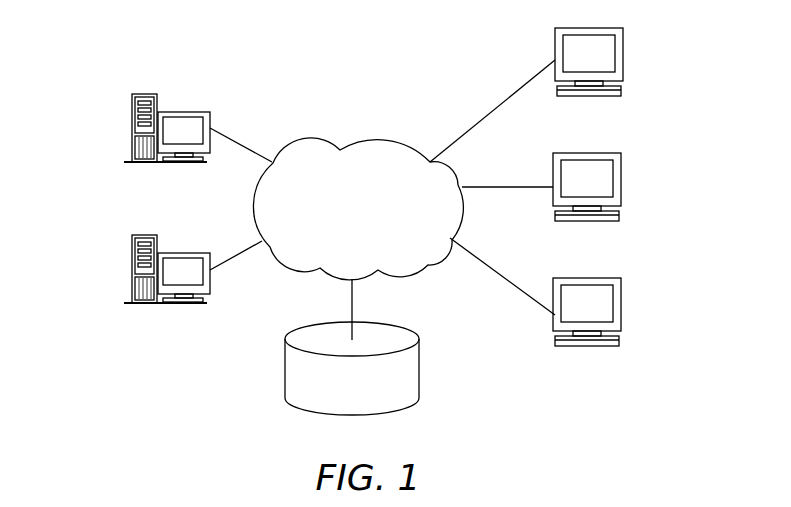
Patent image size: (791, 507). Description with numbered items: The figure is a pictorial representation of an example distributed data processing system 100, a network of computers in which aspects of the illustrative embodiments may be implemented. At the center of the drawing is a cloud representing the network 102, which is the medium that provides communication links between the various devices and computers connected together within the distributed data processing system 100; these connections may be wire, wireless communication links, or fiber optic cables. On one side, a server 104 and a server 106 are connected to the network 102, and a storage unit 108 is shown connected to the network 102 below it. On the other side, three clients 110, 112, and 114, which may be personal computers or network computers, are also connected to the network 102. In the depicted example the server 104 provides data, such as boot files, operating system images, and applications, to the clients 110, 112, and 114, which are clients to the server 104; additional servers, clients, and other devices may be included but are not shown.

The distributed data processing system 100 is at (427, 70).
The network 102 is at (341, 150).
The server 104 is at (132, 128).
The server 106 is at (132, 270).
The storage unit 108 is at (285, 367).
The client 110 is at (627, 58).
The client 112 is at (625, 187).
The client 114 is at (625, 315).